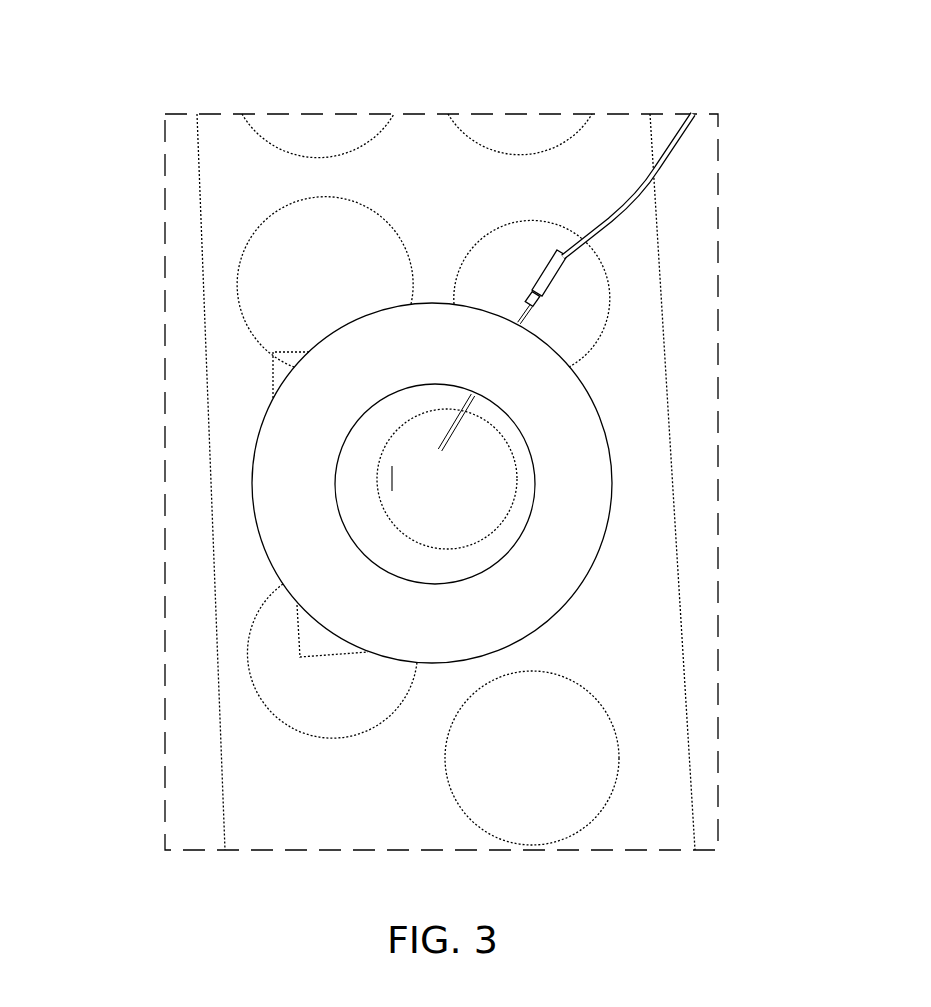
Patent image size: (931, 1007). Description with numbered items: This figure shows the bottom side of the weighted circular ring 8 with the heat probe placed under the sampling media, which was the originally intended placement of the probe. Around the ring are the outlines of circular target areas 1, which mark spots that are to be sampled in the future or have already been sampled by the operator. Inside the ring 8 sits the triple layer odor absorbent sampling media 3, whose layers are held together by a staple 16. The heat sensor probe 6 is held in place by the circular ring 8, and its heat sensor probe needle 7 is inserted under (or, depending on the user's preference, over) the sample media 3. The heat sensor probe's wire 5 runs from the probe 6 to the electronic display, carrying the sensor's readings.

The outlines of circular target areas 1 is at (255, 227).
The triple layer odor absorbent sampling media 3 is at (405, 445).
The heat sensor probe wire 5 is at (608, 218).
The heat sensor probe 6 is at (542, 270).
The heat sensor probe needle 7 is at (462, 418).
The circular ring 8 is at (308, 368).
The staple 16 is at (390, 478).